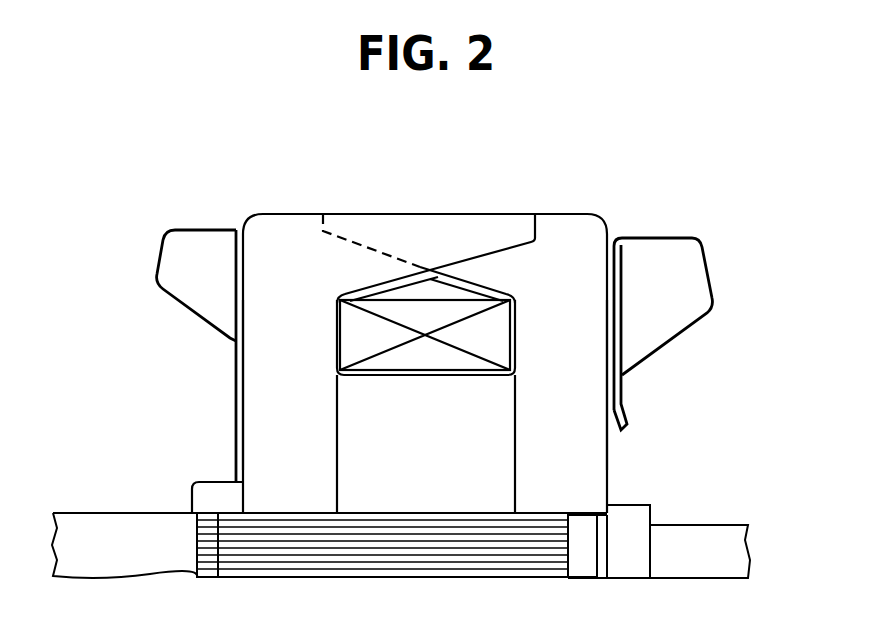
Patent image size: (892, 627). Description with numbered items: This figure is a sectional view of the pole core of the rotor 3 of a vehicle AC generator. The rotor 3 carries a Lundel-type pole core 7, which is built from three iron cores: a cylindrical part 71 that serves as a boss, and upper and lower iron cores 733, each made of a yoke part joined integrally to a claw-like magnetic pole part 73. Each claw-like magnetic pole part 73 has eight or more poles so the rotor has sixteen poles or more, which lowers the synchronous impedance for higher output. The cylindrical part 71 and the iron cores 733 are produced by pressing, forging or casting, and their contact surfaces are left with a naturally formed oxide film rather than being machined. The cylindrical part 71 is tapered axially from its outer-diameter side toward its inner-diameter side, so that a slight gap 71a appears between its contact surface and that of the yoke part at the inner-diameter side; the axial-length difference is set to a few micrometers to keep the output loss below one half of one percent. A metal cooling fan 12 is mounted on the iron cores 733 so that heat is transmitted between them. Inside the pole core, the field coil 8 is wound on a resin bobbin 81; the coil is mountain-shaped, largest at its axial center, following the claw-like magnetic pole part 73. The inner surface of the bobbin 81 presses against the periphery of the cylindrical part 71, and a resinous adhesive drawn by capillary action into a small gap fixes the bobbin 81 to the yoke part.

The rotor 3 is at (738, 346).
The pole core 7 is at (413, 478).
The cylindrical part 71 is at (480, 475).
The slight gap 71a is at (515, 493).
The claw-like magnetic pole part 73 is at (412, 237).
The upper and lower iron cores 733 is at (293, 375).
The field coil 8 is at (454, 303).
The bobbin 81 is at (517, 332).
The cooling fan 12 is at (193, 258).